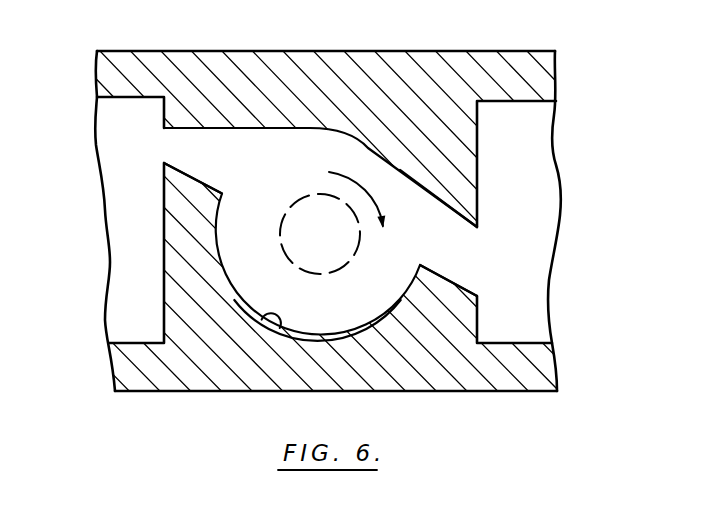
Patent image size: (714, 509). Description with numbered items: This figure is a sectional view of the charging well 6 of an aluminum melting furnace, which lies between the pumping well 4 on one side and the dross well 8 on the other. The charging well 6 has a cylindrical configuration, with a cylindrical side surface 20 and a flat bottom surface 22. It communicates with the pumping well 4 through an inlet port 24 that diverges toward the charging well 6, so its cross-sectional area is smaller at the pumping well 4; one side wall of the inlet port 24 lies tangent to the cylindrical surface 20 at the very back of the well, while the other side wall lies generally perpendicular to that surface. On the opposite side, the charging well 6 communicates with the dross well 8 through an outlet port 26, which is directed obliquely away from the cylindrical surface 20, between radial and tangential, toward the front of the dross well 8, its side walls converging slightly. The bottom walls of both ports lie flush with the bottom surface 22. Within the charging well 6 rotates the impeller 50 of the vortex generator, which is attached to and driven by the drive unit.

The pumping well 4 is at (118, 214).
The charging well 6 is at (292, 153).
The dross well 8 is at (543, 183).
The cylindrical side surface 20 is at (280, 329).
The flat bottom surface 22 is at (356, 302).
The inlet port 24 is at (202, 155).
The outlet port 26 is at (457, 248).
The impeller 50 is at (278, 236).